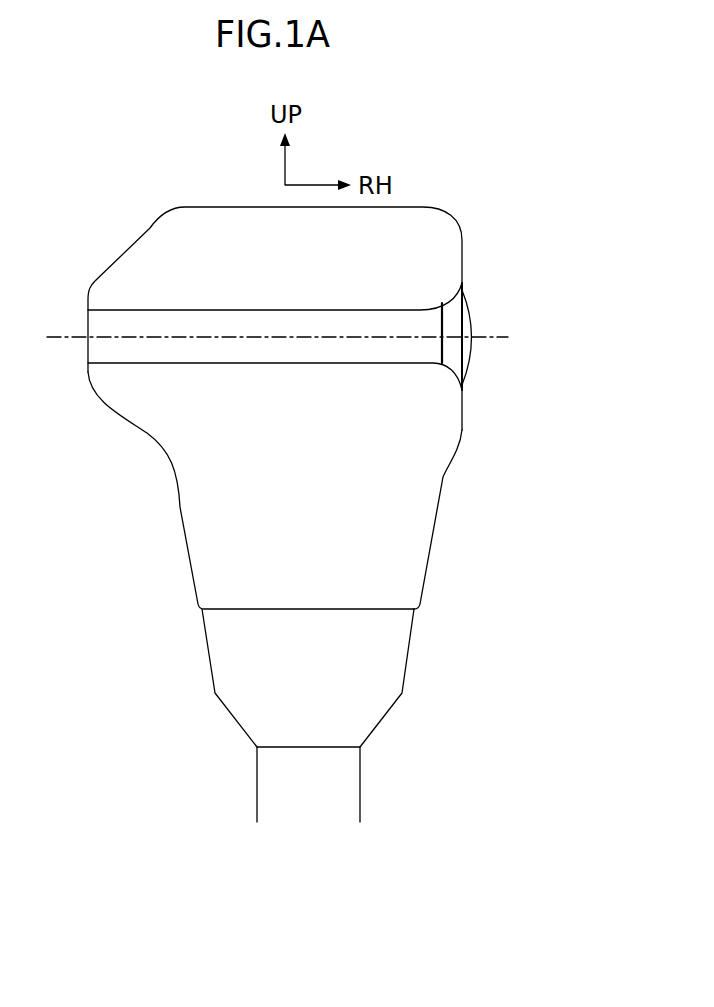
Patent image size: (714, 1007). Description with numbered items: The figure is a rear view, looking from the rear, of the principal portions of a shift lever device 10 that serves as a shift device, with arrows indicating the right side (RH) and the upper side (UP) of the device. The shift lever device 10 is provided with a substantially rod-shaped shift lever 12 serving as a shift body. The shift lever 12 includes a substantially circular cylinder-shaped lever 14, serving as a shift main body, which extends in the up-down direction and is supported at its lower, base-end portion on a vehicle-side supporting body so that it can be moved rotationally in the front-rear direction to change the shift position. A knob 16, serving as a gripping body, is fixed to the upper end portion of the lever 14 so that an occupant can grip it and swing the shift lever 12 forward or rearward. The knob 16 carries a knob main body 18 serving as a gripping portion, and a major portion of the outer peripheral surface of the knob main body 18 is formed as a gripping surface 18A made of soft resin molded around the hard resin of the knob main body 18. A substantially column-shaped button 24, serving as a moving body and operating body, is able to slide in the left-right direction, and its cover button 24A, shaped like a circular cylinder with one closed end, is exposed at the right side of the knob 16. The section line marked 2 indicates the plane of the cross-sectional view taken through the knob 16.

The shift lever device 10 is at (112, 222).
The shift lever 12 is at (419, 208).
The lever 14 is at (257, 795).
The knob 16 is at (179, 517).
The knob main body 18 is at (226, 207).
The gripping surface 18A is at (423, 538).
The button 24 is at (467, 309).
The cover button 24A is at (466, 367).
The section line 2- 2 is at (68, 337).